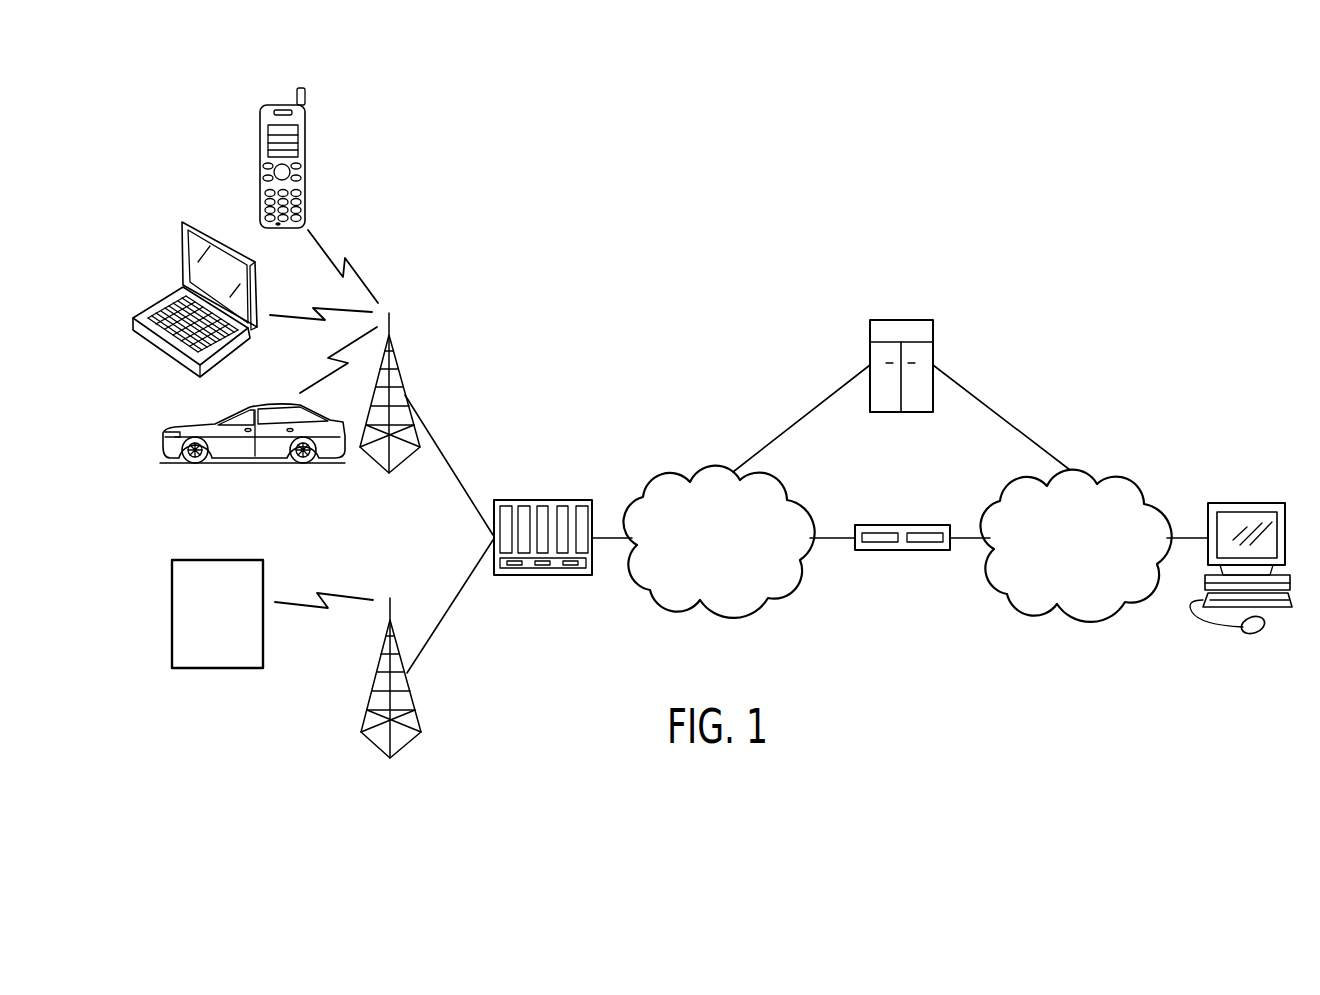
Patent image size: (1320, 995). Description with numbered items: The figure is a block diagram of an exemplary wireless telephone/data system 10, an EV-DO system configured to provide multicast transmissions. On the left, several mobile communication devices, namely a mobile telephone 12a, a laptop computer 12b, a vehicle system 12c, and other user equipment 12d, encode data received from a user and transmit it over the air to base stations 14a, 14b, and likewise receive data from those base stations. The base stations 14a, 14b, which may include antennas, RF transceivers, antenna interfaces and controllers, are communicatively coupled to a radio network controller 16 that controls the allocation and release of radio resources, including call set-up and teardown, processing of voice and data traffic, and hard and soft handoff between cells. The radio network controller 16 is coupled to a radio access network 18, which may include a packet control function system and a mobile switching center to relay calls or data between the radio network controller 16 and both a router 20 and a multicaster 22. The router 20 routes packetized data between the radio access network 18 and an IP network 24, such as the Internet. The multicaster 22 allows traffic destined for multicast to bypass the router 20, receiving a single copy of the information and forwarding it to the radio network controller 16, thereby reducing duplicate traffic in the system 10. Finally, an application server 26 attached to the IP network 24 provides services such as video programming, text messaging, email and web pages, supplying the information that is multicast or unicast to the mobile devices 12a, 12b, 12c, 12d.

The wireless telephone/data system 10 is at (587, 243).
The mobile telephone 12a is at (257, 164).
The laptop computer 12b is at (183, 255).
The vehicle system 12c is at (232, 410).
The user equipment 12d is at (217, 668).
The base station 14a is at (400, 378).
The base station 14b is at (410, 697).
The radio network controller 16 is at (536, 500).
The radio access network 18 is at (715, 613).
The router 20 is at (900, 525).
The multicaster 22 is at (900, 318).
The IP network 24 is at (1125, 468).
The application server 26 is at (1248, 505).